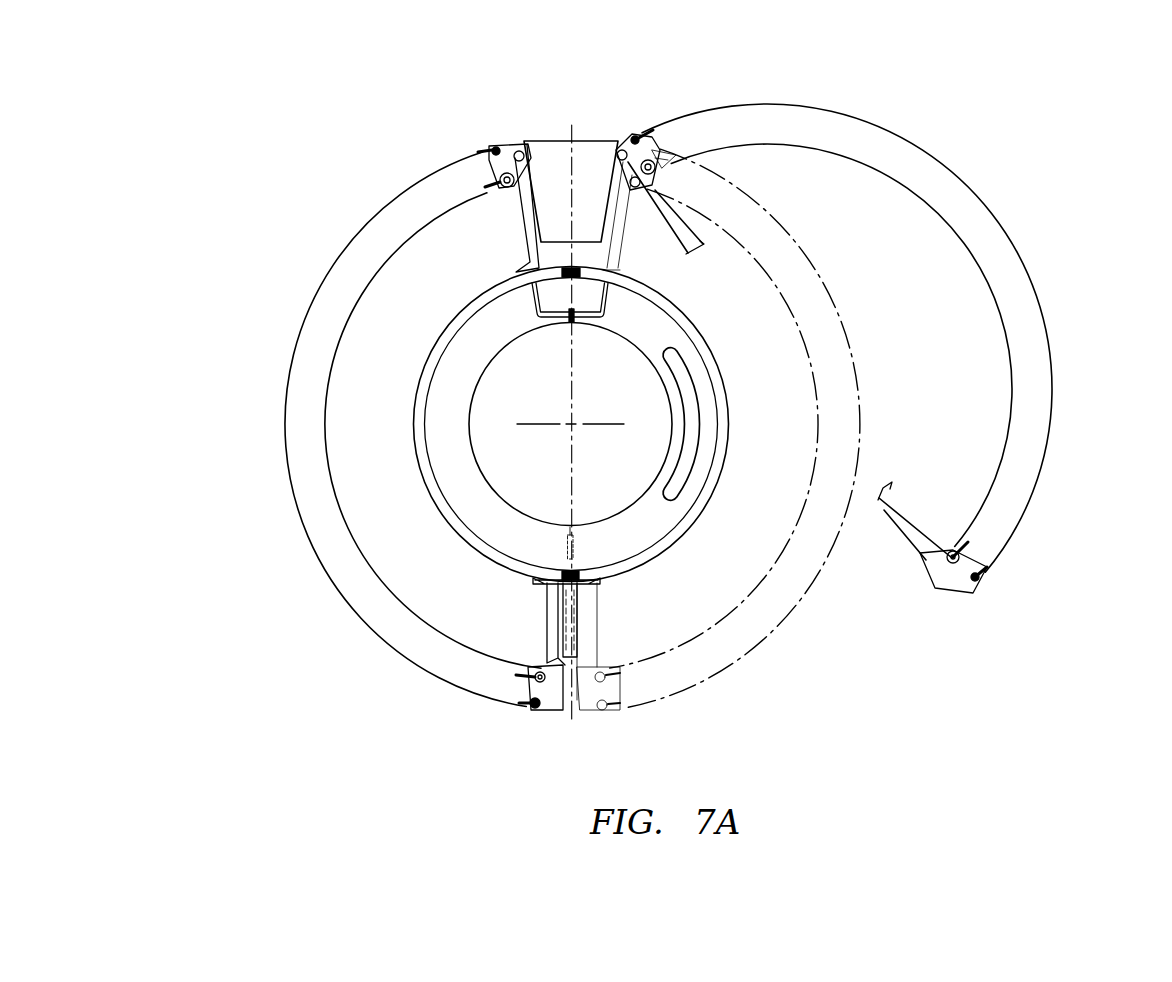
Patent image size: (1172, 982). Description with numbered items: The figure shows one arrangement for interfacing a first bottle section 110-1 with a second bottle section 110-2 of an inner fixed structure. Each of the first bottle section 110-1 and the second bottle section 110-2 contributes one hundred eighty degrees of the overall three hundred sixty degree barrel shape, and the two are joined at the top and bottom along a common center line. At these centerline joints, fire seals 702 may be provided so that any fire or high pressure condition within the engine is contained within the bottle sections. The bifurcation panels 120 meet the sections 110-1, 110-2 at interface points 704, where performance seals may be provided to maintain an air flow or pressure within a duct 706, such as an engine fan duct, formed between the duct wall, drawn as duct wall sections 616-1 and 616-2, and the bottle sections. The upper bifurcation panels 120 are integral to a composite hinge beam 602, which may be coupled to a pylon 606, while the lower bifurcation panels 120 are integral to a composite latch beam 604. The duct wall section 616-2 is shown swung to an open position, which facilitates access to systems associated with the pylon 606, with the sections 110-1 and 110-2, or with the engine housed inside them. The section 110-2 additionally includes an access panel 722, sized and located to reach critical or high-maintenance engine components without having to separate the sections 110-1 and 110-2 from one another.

The first bottle section 110-1 is at (448, 410).
The second bottle section 110-2 is at (632, 527).
The bifurcation panels 120 is at (671, 224).
The hinge beam 602 is at (498, 148).
The latch beam 604 is at (960, 584).
The pylon 606 is at (558, 150).
The duct wall section 616-1 is at (361, 429).
The duct wall section 616-2 is at (1027, 325).
The fire seals 702 is at (578, 278).
The interface points 704 is at (526, 264).
The duct 706 is at (378, 305).
The access panel 722 is at (695, 409).